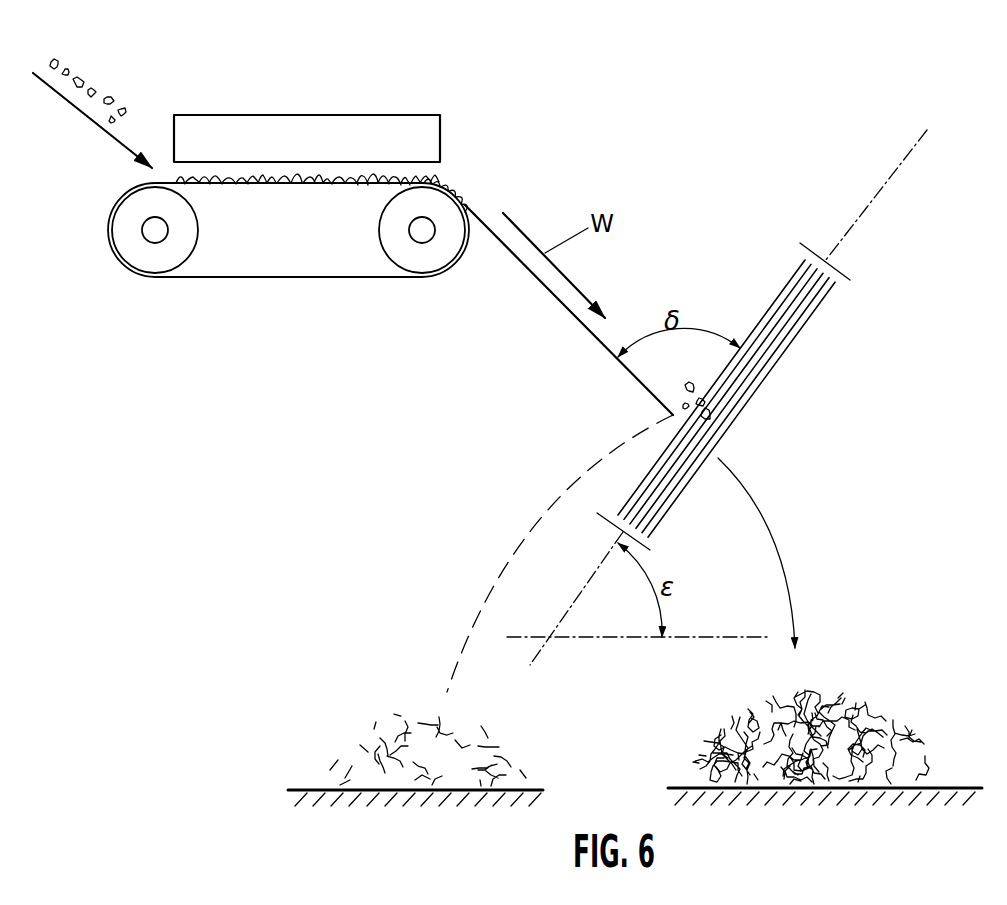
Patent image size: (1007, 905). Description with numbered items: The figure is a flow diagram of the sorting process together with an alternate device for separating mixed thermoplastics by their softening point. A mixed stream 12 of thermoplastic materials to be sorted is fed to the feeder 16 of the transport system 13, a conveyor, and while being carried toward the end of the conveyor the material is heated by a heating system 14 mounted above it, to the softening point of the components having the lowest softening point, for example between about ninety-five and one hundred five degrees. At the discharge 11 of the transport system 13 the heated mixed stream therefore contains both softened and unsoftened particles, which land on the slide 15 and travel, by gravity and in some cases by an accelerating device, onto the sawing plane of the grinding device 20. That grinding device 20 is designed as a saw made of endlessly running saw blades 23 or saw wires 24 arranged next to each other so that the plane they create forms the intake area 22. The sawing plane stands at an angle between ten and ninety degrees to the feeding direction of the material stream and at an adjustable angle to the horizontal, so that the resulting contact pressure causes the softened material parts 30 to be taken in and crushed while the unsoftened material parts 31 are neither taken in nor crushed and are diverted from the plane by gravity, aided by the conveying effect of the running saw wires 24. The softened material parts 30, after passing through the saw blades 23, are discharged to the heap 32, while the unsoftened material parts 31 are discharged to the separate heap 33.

The discharge 11 is at (483, 188).
The mixed stream 12 is at (108, 105).
The transport system 13 is at (297, 262).
The heating system 14 is at (430, 130).
The slide 15 is at (538, 285).
The feeder 16 is at (95, 138).
The grinding device 20 is at (728, 399).
The intake area 22 is at (693, 377).
The saw blades 23 is at (845, 255).
The saw wires 24 is at (807, 332).
The softened material parts 30 is at (785, 537).
The unsoftened material parts 31 is at (505, 553).
The heap 32 is at (893, 718).
The heap 33 is at (357, 722).